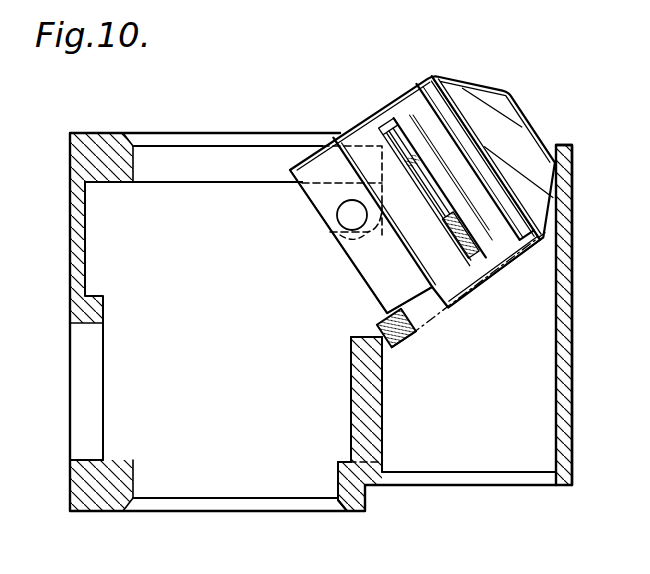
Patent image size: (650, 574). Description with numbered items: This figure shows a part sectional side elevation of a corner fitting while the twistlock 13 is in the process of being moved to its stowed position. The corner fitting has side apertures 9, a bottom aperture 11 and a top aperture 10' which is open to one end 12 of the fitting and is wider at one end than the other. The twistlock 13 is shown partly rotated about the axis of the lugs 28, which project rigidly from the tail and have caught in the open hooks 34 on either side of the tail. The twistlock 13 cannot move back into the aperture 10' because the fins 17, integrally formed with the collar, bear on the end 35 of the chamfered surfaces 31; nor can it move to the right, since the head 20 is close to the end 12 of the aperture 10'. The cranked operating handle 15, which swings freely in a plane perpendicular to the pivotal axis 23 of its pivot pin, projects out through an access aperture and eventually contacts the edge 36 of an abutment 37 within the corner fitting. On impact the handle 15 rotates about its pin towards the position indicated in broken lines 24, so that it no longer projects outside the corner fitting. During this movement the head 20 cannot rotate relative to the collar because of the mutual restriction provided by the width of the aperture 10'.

The top aperture 10' is at (203, 135).
The chamfered surfaces 31 is at (259, 136).
The side apertures 9 is at (85, 357).
The bottom aperture 11 is at (312, 490).
The abutment 37 is at (360, 350).
The one end of the corner fitting 12 is at (555, 150).
The head 20 is at (497, 97).
The lugs 28 is at (343, 205).
The twistlock 13 is at (404, 107).
The fins 17 is at (408, 147).
The end of the chamfered surfaces 35 is at (372, 140).
The open hooks 34 is at (329, 236).
The operating handle 15 is at (398, 345).
The edge of the abutment 36 is at (385, 340).
The pivotal axis 23 is at (420, 357).
The handle position 24 is at (490, 250).